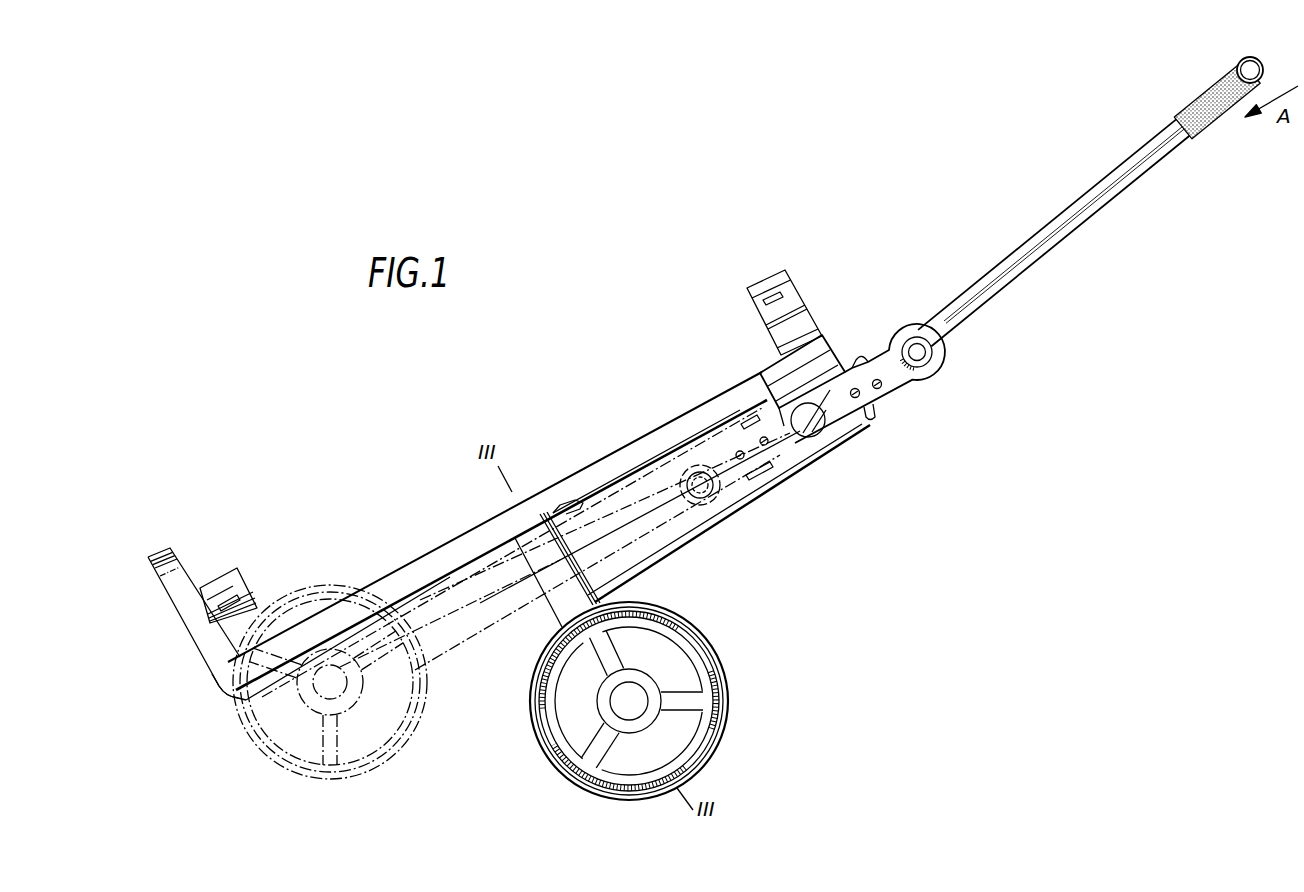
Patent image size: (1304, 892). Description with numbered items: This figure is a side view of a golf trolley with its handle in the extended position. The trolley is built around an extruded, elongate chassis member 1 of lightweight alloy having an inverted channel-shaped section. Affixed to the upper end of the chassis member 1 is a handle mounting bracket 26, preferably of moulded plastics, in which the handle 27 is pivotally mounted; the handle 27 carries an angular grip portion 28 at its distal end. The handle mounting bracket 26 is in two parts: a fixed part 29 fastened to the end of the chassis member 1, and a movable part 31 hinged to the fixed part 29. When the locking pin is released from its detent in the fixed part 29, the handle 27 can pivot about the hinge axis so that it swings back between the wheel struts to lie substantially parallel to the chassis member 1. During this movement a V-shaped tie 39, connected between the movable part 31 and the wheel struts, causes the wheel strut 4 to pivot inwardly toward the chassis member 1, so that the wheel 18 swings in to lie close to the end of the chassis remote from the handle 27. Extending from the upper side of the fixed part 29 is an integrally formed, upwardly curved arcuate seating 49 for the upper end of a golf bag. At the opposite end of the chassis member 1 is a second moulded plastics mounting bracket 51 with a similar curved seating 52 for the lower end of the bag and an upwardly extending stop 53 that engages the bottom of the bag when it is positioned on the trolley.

The chassis member 1 is at (638, 445).
The wheel strut 4 is at (557, 616).
The wheel 18 is at (553, 712).
The handle mounting bracket 26 is at (866, 333).
The handle 27 is at (1045, 254).
The grip portion 28 is at (1205, 126).
The fixed part 29 is at (767, 367).
The movable part 31 is at (903, 384).
The V-shaped tie 39 is at (708, 525).
The arcuate seating 49 is at (785, 272).
The mounting bracket 51 is at (222, 674).
The curved seating 52 is at (236, 572).
The stop 53 is at (179, 580).